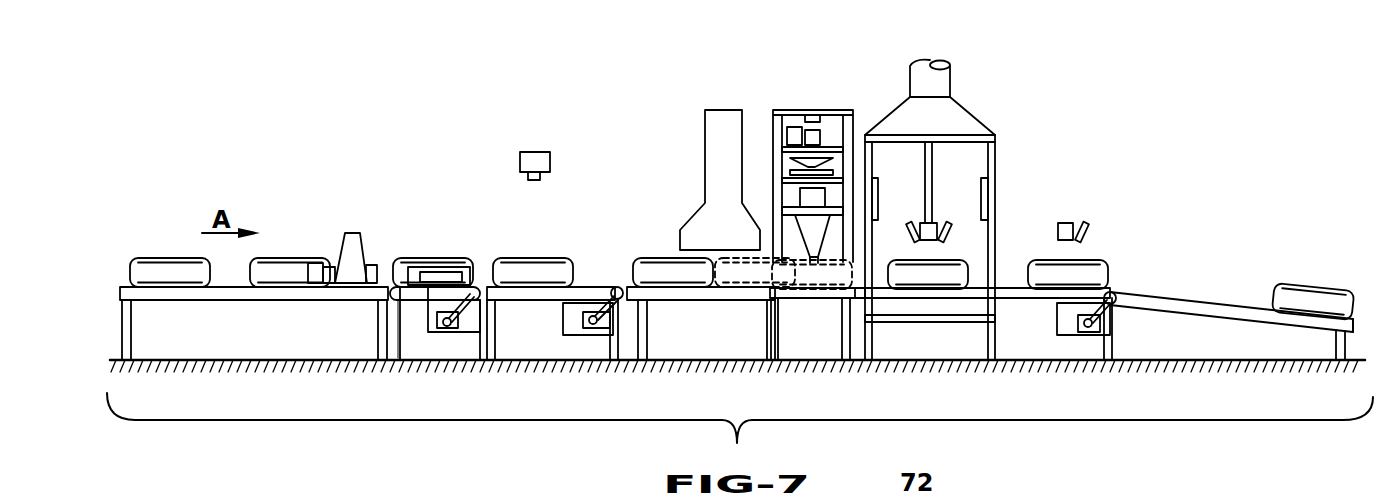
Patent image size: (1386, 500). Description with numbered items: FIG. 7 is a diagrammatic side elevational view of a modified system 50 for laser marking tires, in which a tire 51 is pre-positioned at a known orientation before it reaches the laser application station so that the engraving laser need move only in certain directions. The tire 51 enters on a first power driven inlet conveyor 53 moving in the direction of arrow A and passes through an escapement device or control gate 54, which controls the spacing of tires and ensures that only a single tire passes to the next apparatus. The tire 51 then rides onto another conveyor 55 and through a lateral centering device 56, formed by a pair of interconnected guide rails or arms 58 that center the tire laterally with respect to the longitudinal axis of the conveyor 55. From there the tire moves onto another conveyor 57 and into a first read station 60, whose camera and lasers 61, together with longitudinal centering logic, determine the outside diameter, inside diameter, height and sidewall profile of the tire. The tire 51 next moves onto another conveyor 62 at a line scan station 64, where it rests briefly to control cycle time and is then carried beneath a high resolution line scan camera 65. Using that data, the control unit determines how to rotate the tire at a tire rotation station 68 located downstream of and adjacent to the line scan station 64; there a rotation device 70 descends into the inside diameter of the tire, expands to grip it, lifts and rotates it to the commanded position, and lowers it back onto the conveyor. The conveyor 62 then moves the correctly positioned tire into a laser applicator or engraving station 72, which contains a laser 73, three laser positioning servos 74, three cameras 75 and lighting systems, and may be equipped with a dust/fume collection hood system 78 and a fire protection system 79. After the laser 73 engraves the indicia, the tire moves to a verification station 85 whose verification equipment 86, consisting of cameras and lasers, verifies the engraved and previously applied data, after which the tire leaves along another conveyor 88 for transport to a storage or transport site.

The modified system 50 is at (290, 157).
The tire 51 is at (172, 267).
The first power driven inlet conveyor 53 is at (243, 294).
The escapement device or control gate 54 is at (350, 228).
The conveyor 55 is at (442, 292).
The lateral centering device 56 is at (410, 304).
The conveyor 57 is at (532, 294).
The guide rails or arms 58 is at (422, 270).
The first read station 60 is at (505, 203).
The camera and lasers 61 is at (537, 152).
The conveyor 62 is at (722, 294).
The line scan station 64 is at (668, 186).
The high resolution line scan camera 65 is at (723, 122).
The tire rotation station 68 is at (818, 94).
The rotation device 70 is at (807, 238).
The laser applicator or engraving station 72 is at (976, 80).
The laser 73 is at (940, 213).
The laser positioning servos 74 is at (947, 237).
The cameras 75 is at (912, 225).
The dust/fume collection hood system 78 is at (966, 122).
The fire protection system 79 is at (878, 203).
The verification station 85 is at (1103, 236).
The verification equipment 86 is at (1076, 216).
The conveyor 88 is at (1215, 302).